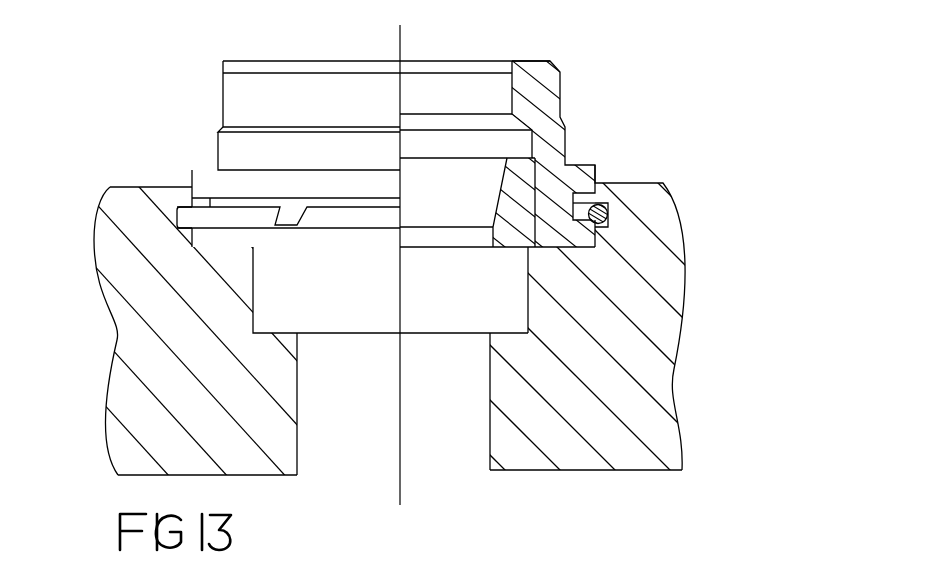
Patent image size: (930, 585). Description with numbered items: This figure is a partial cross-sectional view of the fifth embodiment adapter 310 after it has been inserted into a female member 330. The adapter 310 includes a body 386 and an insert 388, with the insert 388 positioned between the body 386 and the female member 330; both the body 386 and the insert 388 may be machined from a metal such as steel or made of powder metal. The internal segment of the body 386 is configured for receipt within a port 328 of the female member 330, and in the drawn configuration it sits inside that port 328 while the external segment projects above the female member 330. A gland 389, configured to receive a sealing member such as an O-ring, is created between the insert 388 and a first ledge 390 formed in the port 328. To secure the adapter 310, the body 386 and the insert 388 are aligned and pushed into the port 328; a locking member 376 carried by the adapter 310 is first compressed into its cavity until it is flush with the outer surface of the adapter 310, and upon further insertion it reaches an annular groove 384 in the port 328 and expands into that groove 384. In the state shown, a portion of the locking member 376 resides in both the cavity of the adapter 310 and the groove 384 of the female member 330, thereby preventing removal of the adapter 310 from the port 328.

The adapter 310 is at (208, 110).
The locking member 376 is at (190, 221).
The body 386 is at (550, 103).
The annular groove 384 is at (607, 208).
The insert 388 is at (508, 248).
The gland 389 is at (526, 294).
The first ledge 390 is at (283, 333).
The female member 330 is at (690, 369).
The port 328 is at (473, 413).